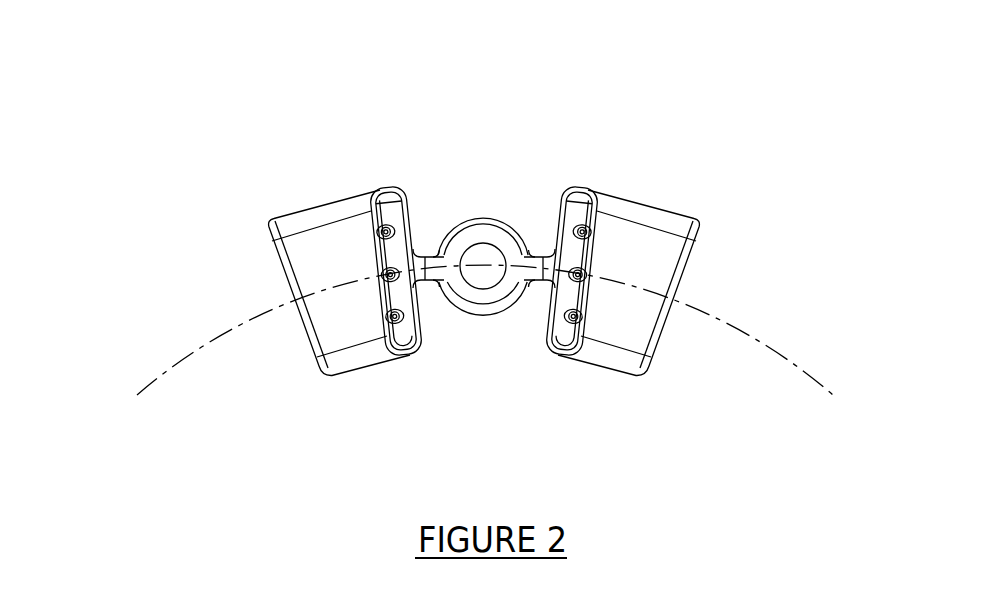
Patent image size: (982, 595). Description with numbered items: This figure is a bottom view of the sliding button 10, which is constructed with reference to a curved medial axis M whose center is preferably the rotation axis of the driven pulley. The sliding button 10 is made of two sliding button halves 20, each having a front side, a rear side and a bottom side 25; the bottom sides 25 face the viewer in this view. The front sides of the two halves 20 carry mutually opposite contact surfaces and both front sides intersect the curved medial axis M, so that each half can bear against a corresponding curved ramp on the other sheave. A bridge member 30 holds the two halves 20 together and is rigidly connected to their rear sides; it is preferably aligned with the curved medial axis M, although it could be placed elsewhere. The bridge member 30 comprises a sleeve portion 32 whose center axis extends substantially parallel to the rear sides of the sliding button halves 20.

The sliding button 10 is at (172, 212).
The sliding button half 20 is at (318, 203).
The bottom side 25 is at (317, 260).
The bridge member 30 is at (540, 250).
The sleeve portion 32 is at (480, 232).
The curved medial axis M is at (724, 314).